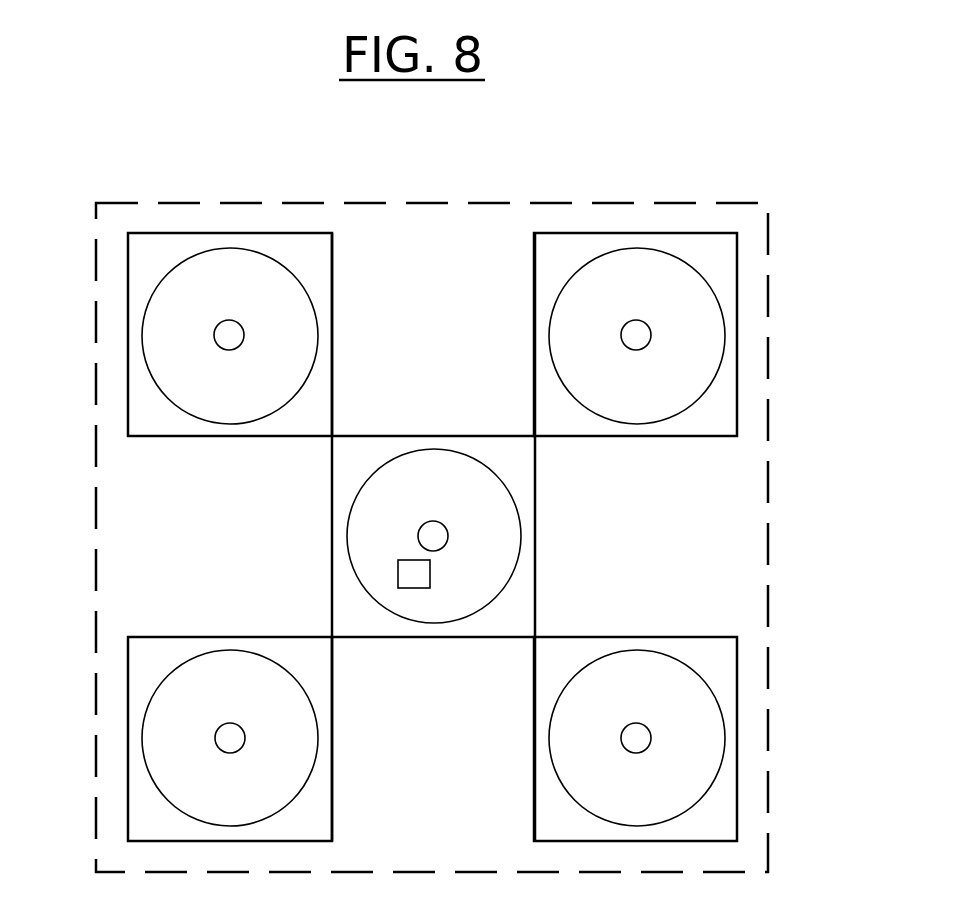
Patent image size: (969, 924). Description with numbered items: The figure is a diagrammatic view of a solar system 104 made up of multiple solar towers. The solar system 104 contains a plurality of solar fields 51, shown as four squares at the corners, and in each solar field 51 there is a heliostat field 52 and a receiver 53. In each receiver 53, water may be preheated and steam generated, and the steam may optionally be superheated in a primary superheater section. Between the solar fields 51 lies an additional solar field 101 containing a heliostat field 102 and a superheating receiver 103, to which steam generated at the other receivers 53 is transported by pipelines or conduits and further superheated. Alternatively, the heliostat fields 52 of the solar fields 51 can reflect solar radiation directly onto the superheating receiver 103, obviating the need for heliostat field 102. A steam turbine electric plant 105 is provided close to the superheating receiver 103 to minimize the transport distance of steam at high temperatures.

The solar field 51 is at (142, 390).
The heliostat field 52 is at (307, 345).
The receiver 53 is at (236, 335).
The additional solar field 101 is at (345, 599).
The heliostat field 102 is at (377, 514).
The superheating receiver 103 is at (440, 537).
The solar system 104 is at (406, 220).
The steam turbine electric plant 105 is at (423, 580).